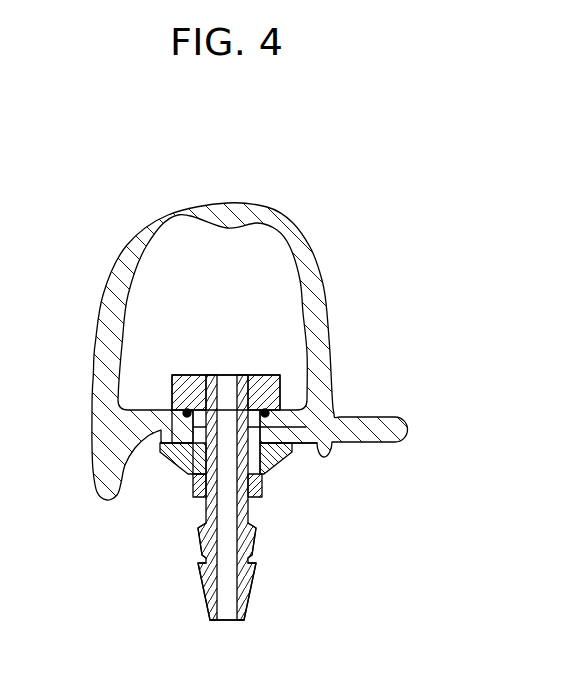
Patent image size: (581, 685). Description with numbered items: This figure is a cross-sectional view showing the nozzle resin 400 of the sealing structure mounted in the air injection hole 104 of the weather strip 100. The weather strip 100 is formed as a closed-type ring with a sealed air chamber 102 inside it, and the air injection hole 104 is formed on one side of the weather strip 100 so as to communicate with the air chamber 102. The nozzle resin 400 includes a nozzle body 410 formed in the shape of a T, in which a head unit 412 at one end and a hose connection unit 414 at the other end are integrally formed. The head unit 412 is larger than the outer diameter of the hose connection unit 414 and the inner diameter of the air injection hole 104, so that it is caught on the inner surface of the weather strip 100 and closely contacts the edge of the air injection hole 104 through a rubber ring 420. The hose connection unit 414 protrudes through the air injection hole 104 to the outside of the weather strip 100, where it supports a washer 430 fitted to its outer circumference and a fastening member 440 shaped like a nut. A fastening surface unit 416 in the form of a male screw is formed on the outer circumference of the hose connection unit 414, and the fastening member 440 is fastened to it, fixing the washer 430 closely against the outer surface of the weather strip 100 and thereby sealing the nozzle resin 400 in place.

The weather strip 100 is at (290, 210).
The air chamber 102 is at (189, 283).
The air injection hole 104 is at (253, 377).
The nozzle resin 400 is at (170, 494).
The nozzle body 410 is at (200, 552).
The head unit 412 is at (187, 375).
The hose connection unit 414 is at (251, 582).
The fastening surface unit 416 is at (248, 520).
The rubber ring 420 is at (272, 413).
The washer 430 is at (280, 460).
The fastening member 440 is at (240, 507).